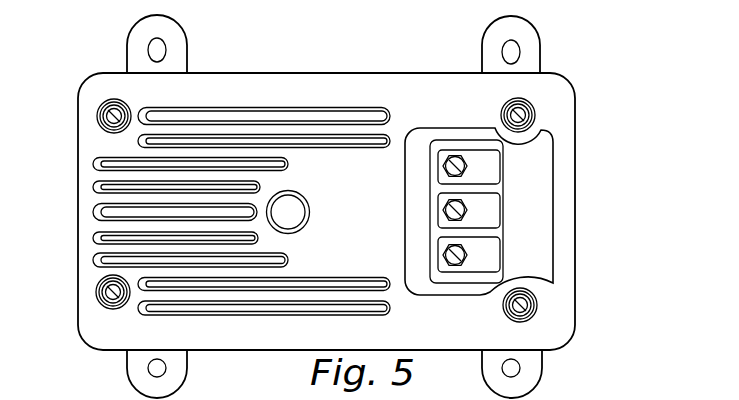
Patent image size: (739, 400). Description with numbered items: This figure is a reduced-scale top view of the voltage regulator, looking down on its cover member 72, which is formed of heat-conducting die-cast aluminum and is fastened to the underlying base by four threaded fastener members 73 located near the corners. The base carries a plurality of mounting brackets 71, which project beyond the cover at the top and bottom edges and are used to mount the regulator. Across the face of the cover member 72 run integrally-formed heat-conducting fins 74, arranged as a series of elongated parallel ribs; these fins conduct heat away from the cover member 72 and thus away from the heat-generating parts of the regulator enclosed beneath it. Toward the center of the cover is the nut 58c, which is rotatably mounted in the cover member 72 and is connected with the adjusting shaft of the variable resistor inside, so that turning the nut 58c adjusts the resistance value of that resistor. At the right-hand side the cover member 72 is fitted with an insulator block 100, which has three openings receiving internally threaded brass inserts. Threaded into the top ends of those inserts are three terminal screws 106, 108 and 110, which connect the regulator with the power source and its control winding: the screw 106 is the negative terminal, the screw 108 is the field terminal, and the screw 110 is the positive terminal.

The cover member 72 is at (565, 195).
The mounting brackets 71 is at (175, 36).
The threaded fastener members 73 is at (103, 110).
The heat-conducting fins 74 is at (245, 112).
The nut 58c is at (292, 213).
The insulator block 100 is at (453, 147).
The positive terminal screw 110 is at (465, 168).
The field terminal screw 108 is at (465, 211).
The negative terminal screw 106 is at (465, 256).